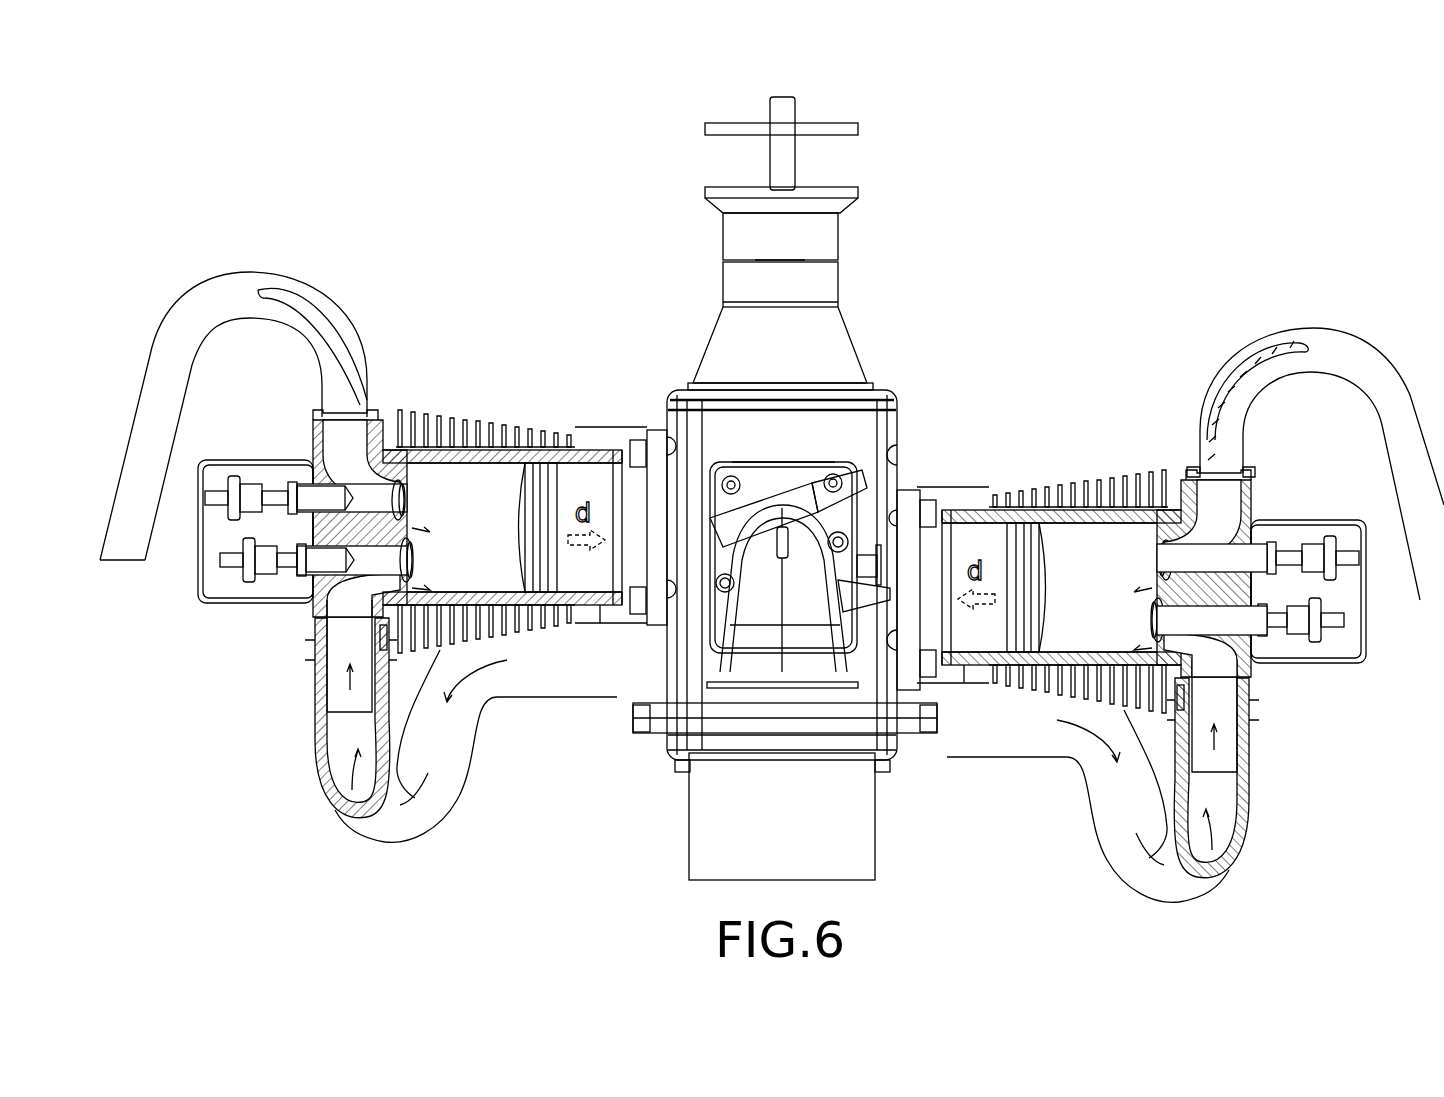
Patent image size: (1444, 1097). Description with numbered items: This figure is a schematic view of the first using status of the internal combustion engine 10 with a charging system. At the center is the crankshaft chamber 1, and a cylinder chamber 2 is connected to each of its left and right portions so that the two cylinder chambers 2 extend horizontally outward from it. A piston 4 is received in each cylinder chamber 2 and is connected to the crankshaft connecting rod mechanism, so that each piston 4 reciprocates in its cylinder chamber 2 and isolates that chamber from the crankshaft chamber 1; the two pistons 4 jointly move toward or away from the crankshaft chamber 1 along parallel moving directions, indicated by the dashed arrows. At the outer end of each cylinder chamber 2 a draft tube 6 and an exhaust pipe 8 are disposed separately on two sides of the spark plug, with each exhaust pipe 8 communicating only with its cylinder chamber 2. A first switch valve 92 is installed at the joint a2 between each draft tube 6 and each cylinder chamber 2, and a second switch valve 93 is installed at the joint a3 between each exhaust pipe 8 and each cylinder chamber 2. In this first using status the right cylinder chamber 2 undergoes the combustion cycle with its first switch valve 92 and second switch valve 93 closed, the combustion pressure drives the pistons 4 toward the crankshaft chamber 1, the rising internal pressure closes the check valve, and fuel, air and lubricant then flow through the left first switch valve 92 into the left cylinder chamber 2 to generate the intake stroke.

The internal combustion engine 10 is at (797, 71).
The crankshaft chamber 1 is at (898, 423).
The cylinder chamber 2 is at (590, 460).
The piston 4 is at (600, 572).
The draft tube 6 is at (318, 758).
The exhaust pipe 8 is at (330, 303).
The first switch valve 92 is at (322, 563).
The second switch valve 93 is at (315, 500).
The joint between draft tube and cylinder chamber a2 is at (418, 588).
The joint between exhaust pipe and cylinder chamber a3 is at (405, 478).